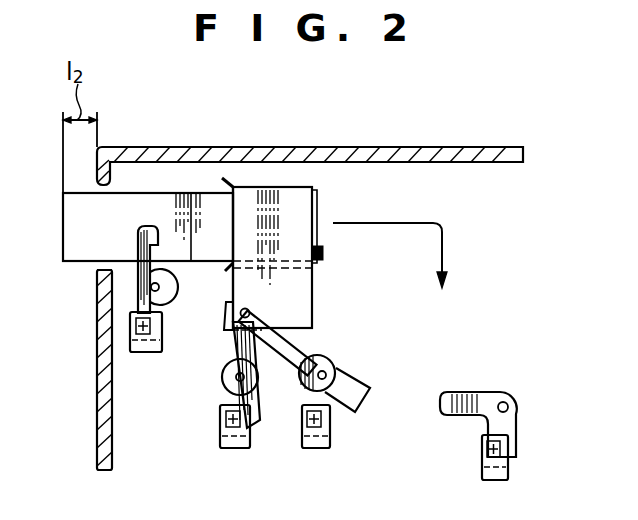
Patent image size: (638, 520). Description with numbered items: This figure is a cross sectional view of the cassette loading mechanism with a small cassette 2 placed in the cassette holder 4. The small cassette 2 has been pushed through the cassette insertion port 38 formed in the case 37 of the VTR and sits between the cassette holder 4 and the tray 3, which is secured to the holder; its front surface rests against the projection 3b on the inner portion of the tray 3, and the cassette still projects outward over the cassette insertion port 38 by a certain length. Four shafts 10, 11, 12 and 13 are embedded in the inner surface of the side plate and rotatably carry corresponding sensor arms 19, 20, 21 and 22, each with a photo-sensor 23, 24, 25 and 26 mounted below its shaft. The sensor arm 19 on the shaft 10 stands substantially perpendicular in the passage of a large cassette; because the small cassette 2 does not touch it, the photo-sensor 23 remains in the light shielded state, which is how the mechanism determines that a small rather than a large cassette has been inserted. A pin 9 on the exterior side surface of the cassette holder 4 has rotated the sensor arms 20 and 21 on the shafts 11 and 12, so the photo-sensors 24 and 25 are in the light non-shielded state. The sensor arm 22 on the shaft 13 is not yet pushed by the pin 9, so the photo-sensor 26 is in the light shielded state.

The small cassette 2 is at (63, 200).
The tray 3 is at (228, 267).
The projection 3b is at (323, 255).
The cassette holder 4 is at (305, 290).
The pin 9 is at (250, 312).
The shaft 10 is at (163, 303).
The shaft 11 is at (258, 392).
The shaft 12 is at (331, 362).
The shaft 13 is at (510, 406).
The sensor arm 19 is at (138, 241).
The sensor arm 20 is at (228, 383).
The sensor arm 21 is at (365, 399).
The sensor arm 22 is at (455, 392).
The photo-sensor 23 is at (148, 352).
The photo-sensor 24 is at (235, 449).
The photo-sensor 25 is at (317, 449).
The photo-sensor 26 is at (482, 476).
The case 37 is at (283, 147).
The cassette insertion port 38 is at (97, 272).